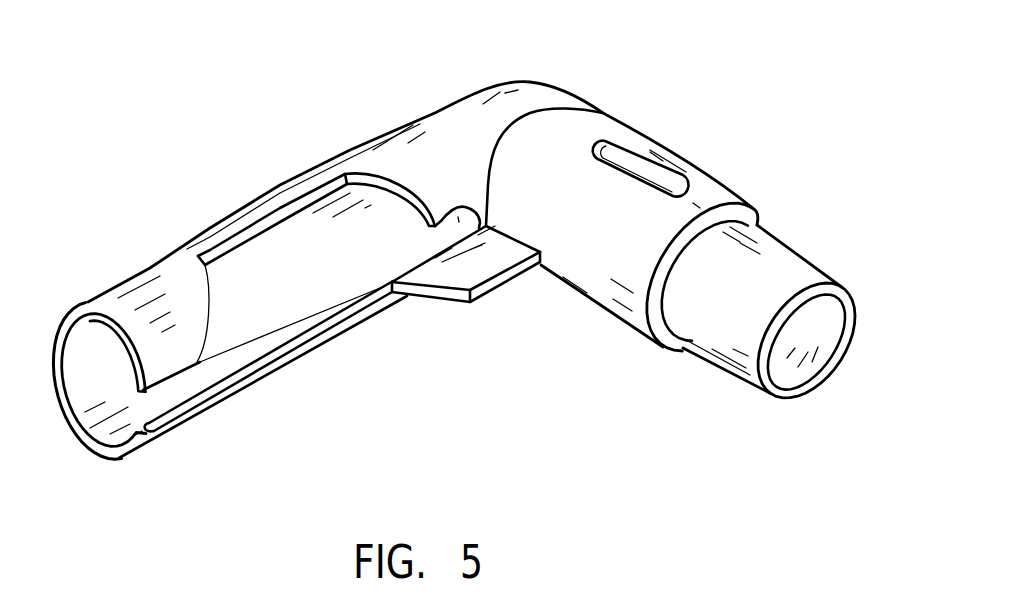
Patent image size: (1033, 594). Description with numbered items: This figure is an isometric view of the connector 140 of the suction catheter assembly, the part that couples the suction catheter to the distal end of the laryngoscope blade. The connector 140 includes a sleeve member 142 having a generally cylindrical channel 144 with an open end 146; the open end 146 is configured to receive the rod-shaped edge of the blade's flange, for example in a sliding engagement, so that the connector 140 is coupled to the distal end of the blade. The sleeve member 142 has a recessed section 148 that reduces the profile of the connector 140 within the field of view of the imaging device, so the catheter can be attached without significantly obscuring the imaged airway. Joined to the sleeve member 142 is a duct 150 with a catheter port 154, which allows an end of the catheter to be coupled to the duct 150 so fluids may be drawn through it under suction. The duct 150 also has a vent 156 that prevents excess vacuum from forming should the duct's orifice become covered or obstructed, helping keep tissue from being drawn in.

The connector 140 is at (707, 121).
The sleeve member 142 is at (157, 292).
The channel 144 is at (282, 313).
The open end 146 is at (102, 388).
The recessed section 148 is at (298, 248).
The duct 150 is at (710, 188).
The catheter port 154 is at (760, 280).
The vent 156 is at (622, 158).